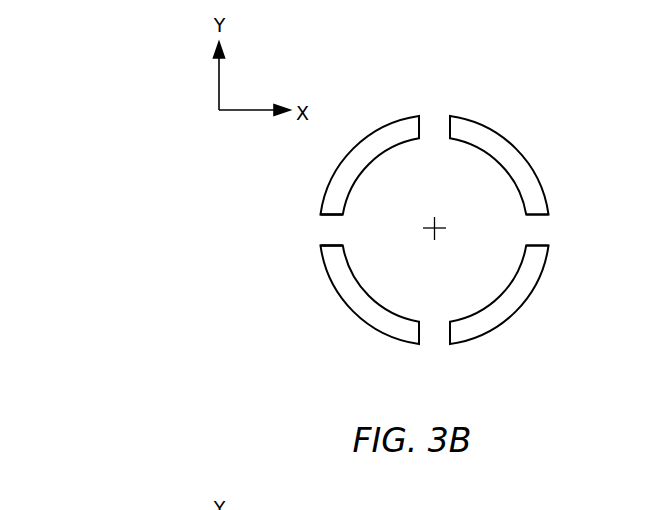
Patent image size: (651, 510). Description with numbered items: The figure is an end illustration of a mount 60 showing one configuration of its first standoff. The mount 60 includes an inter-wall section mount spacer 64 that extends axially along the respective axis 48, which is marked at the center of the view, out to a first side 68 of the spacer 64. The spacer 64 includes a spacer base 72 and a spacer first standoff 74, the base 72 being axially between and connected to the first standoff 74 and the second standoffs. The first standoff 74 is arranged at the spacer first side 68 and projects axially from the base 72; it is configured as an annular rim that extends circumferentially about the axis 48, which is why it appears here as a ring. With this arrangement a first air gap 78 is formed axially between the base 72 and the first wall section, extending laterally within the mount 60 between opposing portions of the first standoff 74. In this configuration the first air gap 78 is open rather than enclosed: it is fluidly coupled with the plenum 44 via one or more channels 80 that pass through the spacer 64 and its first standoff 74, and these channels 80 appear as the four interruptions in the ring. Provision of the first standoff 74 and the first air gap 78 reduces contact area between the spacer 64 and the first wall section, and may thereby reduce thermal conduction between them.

The plenum 44 is at (610, 202).
The axis 48 is at (437, 236).
The mount 60 is at (298, 268).
The inter-wall section mount spacer 64 is at (432, 231).
The first side 68 is at (490, 322).
The spacer base 72 is at (362, 234).
The spacer first standoff 74 is at (350, 302).
The first air gap 78 is at (435, 206).
The channels 80 is at (435, 130).